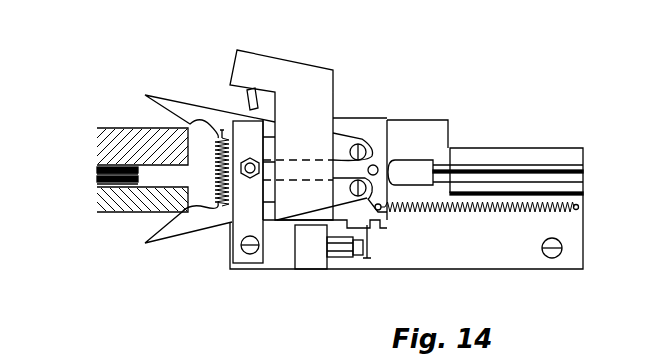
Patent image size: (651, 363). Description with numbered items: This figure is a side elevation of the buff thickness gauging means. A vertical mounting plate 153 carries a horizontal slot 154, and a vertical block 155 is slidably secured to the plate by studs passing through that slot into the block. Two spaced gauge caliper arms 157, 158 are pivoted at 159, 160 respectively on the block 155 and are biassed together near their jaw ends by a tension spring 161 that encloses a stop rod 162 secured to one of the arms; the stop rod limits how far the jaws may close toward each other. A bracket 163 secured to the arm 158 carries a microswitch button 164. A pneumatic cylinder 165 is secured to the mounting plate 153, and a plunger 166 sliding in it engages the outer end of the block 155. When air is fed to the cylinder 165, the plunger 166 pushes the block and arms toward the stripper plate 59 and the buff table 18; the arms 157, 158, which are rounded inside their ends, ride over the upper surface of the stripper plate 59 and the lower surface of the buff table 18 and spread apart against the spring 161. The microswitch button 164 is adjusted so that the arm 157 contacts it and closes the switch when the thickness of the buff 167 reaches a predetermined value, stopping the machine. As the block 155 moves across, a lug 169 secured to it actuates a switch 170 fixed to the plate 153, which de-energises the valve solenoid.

The buff table 18 is at (108, 213).
The stripper plate 59 is at (110, 128).
The vertical mounting plate 153 is at (523, 252).
The horizontal slot 154 is at (412, 160).
The vertical block 155 is at (355, 126).
The gauge caliper arm 157 is at (178, 98).
The gauge caliper arm 158 is at (172, 234).
The pivot 159 is at (376, 136).
The pivot 160 is at (380, 228).
The tension spring 161 is at (216, 196).
The stop rod 162 is at (202, 215).
The bracket 163 is at (295, 60).
The microswitch button 164 is at (258, 100).
The pneumatic cylinder 165 is at (536, 158).
The plunger 166 is at (427, 158).
The buff 167 is at (97, 174).
The lug 169 is at (367, 264).
The switch 170 is at (308, 264).